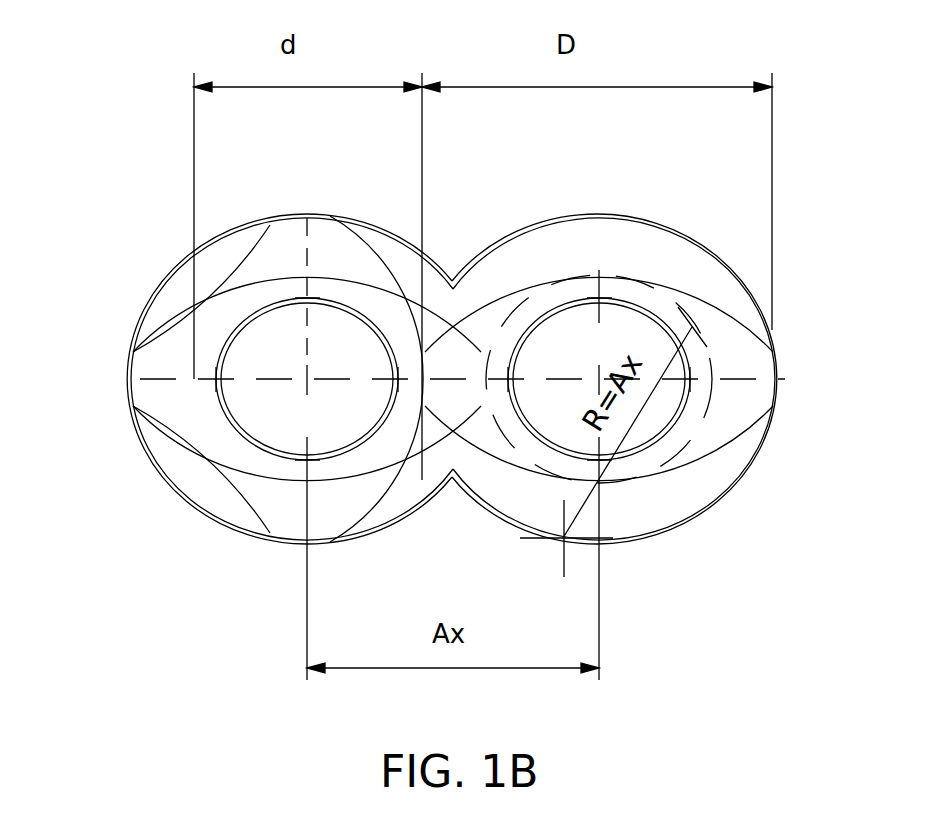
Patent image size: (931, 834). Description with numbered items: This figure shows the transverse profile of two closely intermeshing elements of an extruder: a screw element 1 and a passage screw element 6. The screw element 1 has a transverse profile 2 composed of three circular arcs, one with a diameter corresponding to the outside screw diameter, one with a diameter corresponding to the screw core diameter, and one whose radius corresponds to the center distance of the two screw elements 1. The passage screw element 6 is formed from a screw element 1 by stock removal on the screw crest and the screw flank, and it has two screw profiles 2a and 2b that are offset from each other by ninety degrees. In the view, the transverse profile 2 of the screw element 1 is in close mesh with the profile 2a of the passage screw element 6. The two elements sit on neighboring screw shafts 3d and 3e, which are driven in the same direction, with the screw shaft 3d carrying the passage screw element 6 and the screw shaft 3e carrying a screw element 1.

The screw element 1 is at (660, 484).
The transverse profile 2 is at (599, 379).
The screw profile 2a is at (237, 490).
The screw profile 2b is at (155, 422).
The screw shaft 3d is at (302, 376).
The screw shaft 3e is at (635, 290).
The passage screw element 6 is at (177, 470).